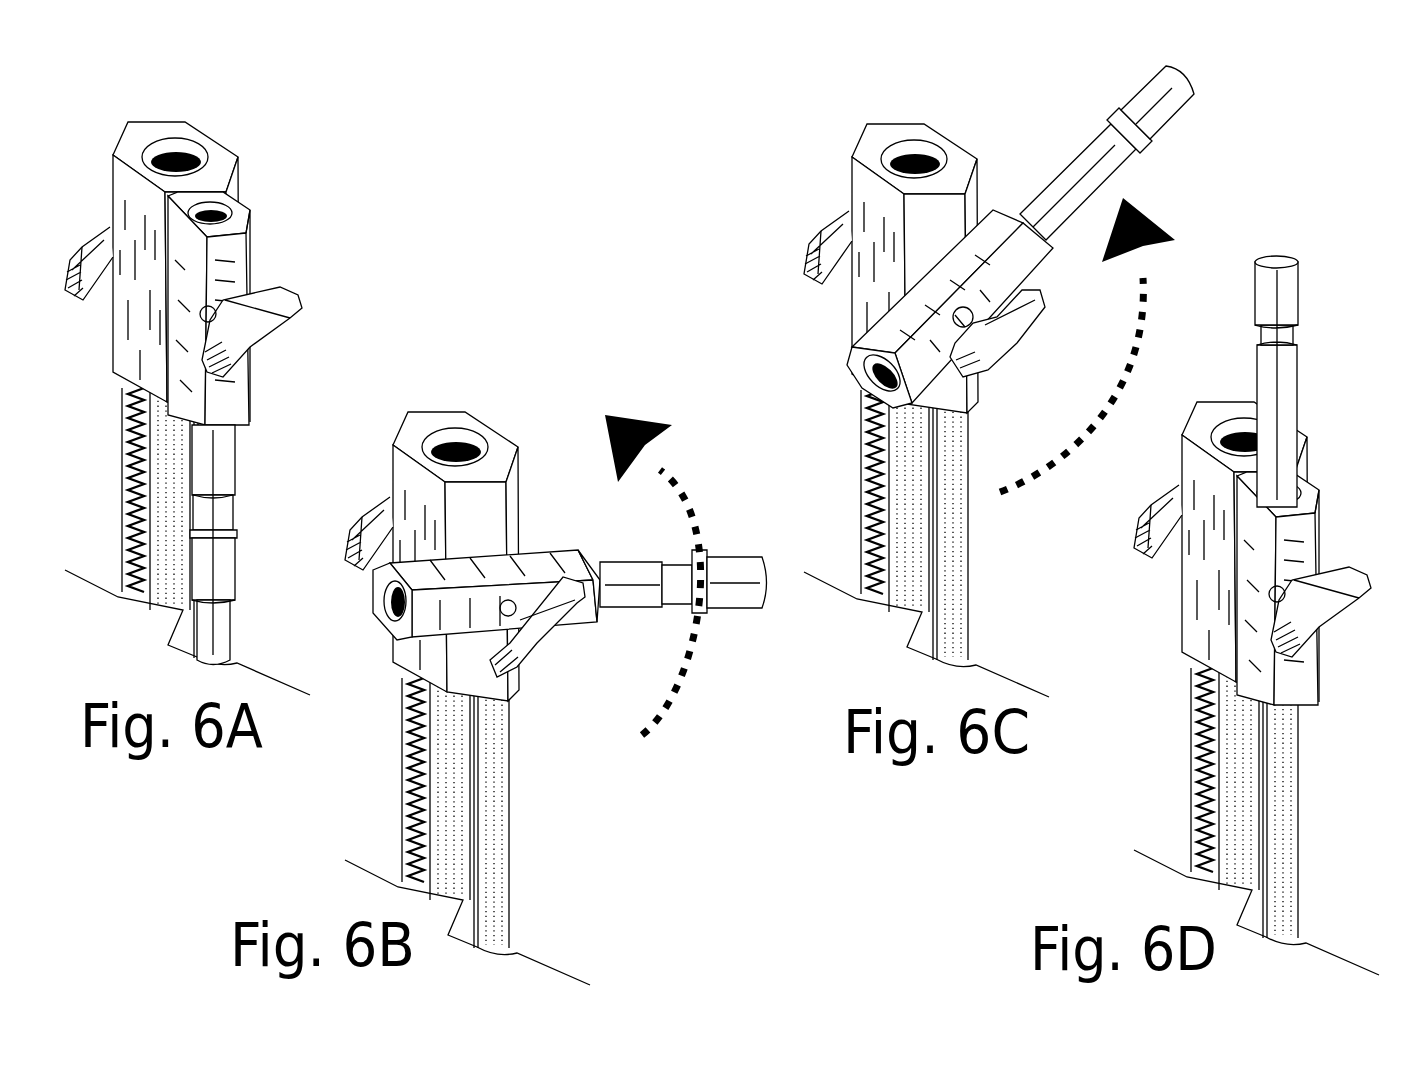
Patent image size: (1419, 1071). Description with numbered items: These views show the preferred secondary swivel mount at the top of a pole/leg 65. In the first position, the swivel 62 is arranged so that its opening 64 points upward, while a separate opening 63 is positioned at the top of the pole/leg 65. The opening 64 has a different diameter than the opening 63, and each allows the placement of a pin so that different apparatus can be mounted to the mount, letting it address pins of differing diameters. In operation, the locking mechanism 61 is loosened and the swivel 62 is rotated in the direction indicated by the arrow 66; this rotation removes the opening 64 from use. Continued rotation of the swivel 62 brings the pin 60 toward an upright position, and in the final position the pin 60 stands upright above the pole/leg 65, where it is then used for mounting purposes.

In FIG. 6A, the pin 60 is at (223, 527).
In FIG. 6B, the pin 60 is at (735, 570).
In FIG. 6C, the pin 60 is at (1080, 170).
In FIG. 6D, the pin 60 is at (1297, 293).
In FIG. 6A, the locking mechanism 61 is at (280, 333).
In FIG. 6B, the locking mechanism 61 is at (547, 637).
In FIG. 6C, the locking mechanism 61 is at (1000, 347).
In FIG. 6D, the locking mechanism 61 is at (1338, 627).
In FIG. 6A, the swivel 62 is at (223, 402).
In FIG. 6B, the swivel 62 is at (543, 563).
In FIG. 6C, the swivel 62 is at (1020, 255).
In FIG. 6D, the swivel 62 is at (1278, 588).
In FIG. 6A, the opening 63 is at (177, 142).
In FIG. 6B, the opening 63 is at (457, 420).
In FIG. 6C, the opening 63 is at (907, 140).
In FIG. 6D, the opening 63 is at (1230, 420).
In FIG. 6A, the opening 64 is at (235, 207).
In FIG. 6B, the opening 64 is at (407, 603).
In FIG. 6C, the opening 64 is at (870, 388).
In FIG. 6A, the pole/leg 65 is at (130, 423).
In FIG. 6B, the pole/leg 65 is at (496, 802).
In FIG. 6C, the pole/leg 65 is at (950, 563).
In FIG. 6D, the pole/leg 65 is at (1237, 735).
In FIG. 6B, the arrow 66 is at (671, 577).
In FIG. 6C, the arrow 66 is at (1087, 367).